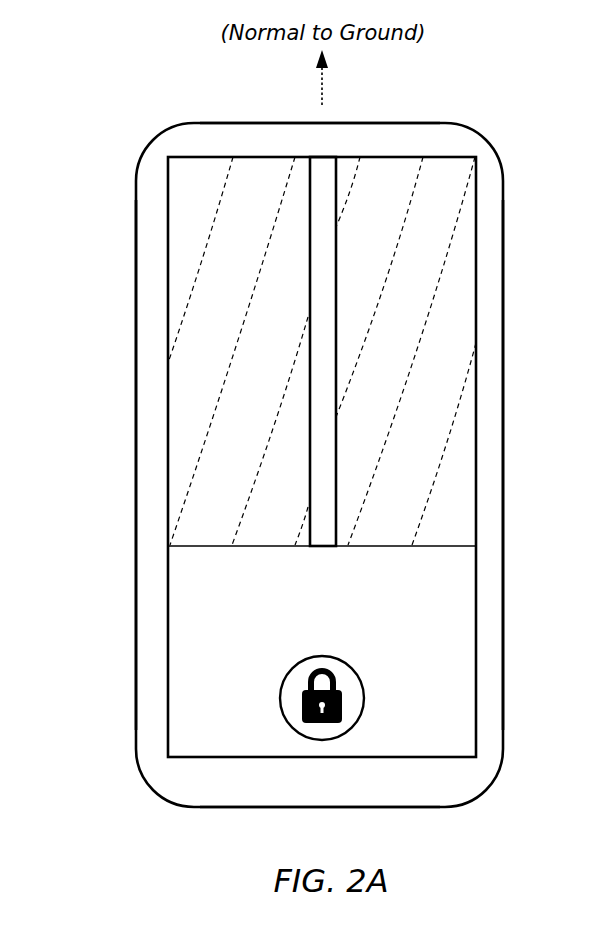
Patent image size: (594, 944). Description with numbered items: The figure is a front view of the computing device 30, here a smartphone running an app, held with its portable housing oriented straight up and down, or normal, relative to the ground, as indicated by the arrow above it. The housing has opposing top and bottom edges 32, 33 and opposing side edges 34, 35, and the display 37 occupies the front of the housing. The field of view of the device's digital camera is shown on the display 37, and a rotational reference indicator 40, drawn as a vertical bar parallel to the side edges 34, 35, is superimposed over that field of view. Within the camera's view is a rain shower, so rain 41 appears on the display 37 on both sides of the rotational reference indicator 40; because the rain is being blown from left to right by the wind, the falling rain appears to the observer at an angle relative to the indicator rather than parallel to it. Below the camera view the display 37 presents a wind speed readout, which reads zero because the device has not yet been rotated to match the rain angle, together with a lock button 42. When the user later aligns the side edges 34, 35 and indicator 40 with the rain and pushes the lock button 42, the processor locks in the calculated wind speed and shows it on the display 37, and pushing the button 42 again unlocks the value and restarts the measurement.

The computing device 30 is at (492, 88).
The top edge 32 is at (212, 122).
The bottom edge 33 is at (214, 808).
The side edge 34 is at (136, 424).
The side edge 35 is at (504, 404).
The display 37 is at (476, 201).
The rotational reference indicator 40 is at (336, 270).
The rain 41 is at (214, 216).
The lock button 42 is at (288, 683).